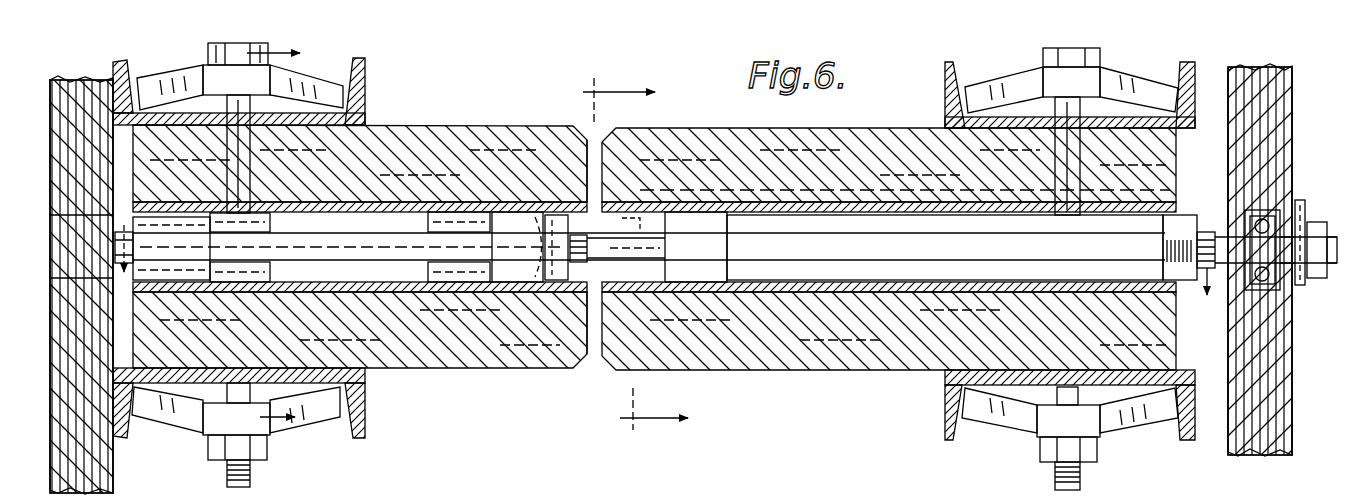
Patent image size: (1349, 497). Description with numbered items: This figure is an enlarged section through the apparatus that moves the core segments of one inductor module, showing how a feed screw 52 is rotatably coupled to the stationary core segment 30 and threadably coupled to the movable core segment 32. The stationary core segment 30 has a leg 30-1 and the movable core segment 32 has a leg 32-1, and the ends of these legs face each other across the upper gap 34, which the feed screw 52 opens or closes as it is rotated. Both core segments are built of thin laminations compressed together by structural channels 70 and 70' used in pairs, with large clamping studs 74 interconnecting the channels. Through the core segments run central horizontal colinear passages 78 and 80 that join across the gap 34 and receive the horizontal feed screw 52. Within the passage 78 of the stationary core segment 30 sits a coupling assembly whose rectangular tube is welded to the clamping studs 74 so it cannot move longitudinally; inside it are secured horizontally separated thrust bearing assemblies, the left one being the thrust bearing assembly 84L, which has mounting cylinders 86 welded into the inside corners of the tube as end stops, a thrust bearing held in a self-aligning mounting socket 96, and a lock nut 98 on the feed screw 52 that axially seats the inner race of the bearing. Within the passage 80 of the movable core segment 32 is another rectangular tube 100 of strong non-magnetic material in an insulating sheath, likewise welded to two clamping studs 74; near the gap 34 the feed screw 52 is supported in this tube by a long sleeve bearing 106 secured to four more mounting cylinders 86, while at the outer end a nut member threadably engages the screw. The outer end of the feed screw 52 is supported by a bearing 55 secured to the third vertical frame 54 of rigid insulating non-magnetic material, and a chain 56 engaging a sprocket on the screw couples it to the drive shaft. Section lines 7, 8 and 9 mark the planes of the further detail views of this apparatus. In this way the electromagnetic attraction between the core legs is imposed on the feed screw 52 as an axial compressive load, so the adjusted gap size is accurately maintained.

The stationary core segment 30 is at (367, 88).
The leg of stationary core segment 30-1 is at (470, 126).
The movable core segment 32 is at (952, 80).
The leg of movable core segment 32-1 is at (745, 130).
The upper gap 34 is at (589, 120).
The feed screw 52 is at (365, 243).
The third vertical frame 54 is at (1265, 130).
The bearing 55 is at (1265, 197).
The chain 56 is at (1300, 290).
The structural channel 70 is at (1139, 426).
The structural channel 70' is at (655, 259).
The clamping stud 74 is at (1063, 98).
The central horizontal passage 78 is at (370, 196).
The central horizontal passage 80 is at (657, 196).
The thrust bearing assembly 84L is at (272, 222).
The mounting cylinder 86 is at (322, 270).
The self-aligning mounting socket 96 is at (506, 241).
The lock nut 98 is at (142, 226).
The rectangular tube 100 is at (855, 195).
The long sleeve bearing 106 is at (652, 242).
The section line 7- 7 is at (668, 273).
The section line 8- 8 is at (643, 253).
The section line 9- 9 is at (281, 235).